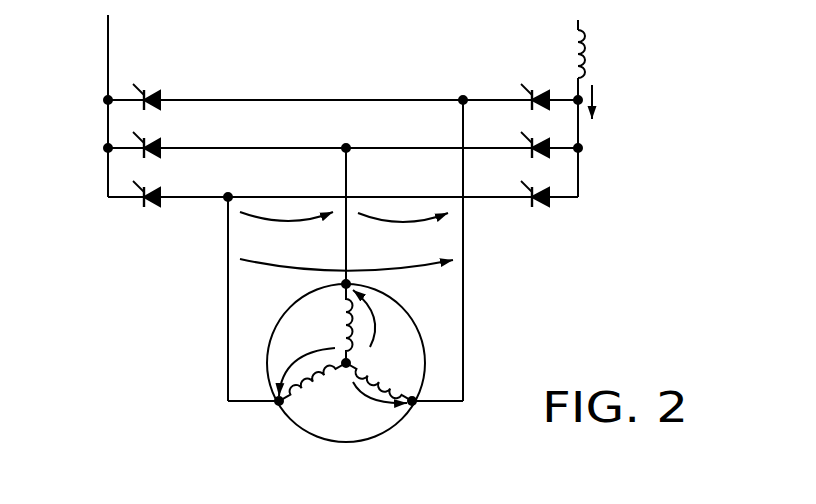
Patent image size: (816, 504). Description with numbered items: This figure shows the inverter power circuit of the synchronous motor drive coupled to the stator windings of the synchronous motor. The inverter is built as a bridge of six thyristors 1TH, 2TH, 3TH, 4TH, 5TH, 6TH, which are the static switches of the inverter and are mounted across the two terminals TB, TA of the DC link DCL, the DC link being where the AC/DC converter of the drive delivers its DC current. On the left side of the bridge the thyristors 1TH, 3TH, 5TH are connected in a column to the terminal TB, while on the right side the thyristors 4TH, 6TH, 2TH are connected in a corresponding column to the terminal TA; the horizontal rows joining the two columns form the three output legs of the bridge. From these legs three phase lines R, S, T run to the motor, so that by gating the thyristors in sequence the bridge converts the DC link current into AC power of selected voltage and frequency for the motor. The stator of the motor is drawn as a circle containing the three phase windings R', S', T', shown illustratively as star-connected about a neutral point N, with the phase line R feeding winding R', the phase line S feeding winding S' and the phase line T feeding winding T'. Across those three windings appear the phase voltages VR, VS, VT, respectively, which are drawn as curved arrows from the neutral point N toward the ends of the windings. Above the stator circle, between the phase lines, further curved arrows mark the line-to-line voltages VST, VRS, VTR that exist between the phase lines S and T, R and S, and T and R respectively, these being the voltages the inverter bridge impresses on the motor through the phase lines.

The DC link DCL is at (370, 61).
The DC link terminal TB is at (108, 115).
The DC link terminal TA is at (578, 183).
The thyristor 1TH is at (162, 90).
The thyristor 2TH is at (545, 187).
The thyristor 3TH is at (162, 138).
The thyristor 4TH is at (545, 90).
The thyristor 5TH is at (162, 187).
The thyristor 6TH is at (545, 138).
The phase line R is at (455, 250).
The phase line S is at (329, 216).
The phase line T is at (228, 299).
The neutral point N is at (346, 364).
The phase winding S' is at (333, 323).
The phase winding T' is at (310, 388).
The phase winding R' is at (379, 376).
The line voltage S-T VST is at (265, 220).
The line voltage R-S VRS is at (389, 220).
The line voltage T-R VTR is at (398, 270).
The voltage across winding S' VS is at (372, 318).
The voltage across winding T' VT is at (307, 368).
The voltage across winding R' VR is at (380, 395).